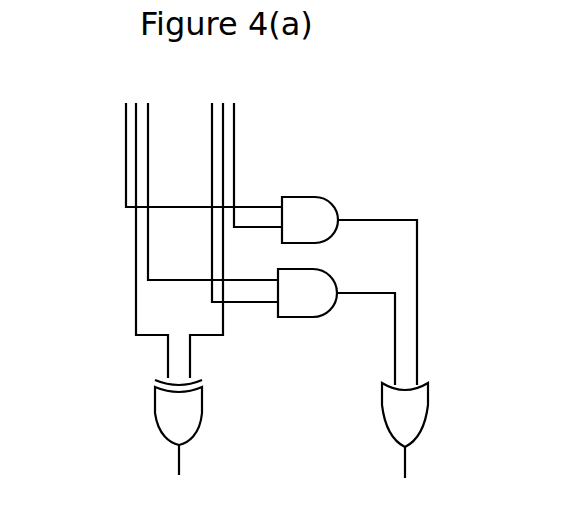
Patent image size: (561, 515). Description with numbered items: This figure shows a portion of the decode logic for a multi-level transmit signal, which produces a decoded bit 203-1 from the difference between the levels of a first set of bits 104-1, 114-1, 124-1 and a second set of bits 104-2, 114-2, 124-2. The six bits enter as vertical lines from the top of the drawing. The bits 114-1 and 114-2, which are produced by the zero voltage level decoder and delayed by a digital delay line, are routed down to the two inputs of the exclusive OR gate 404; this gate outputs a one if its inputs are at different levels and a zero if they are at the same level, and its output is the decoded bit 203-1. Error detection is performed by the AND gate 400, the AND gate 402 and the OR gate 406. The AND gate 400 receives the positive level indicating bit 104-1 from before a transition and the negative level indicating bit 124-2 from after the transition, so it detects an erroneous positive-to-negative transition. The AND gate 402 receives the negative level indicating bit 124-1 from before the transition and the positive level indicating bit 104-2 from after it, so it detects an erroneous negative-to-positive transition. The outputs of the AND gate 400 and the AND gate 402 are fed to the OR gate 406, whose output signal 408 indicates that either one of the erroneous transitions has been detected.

The positive level indicating bit 104-1 is at (126, 116).
The zero level bit 114-1 is at (136, 145).
The negative level indicating bit 124-1 is at (148, 180).
The positive level indicating bit 104-2 is at (234, 133).
The zero level bit 114-2 is at (223, 167).
The negative level indicating bit 124-2 is at (234, 197).
The AND gate 400 is at (335, 204).
The AND gate 402 is at (330, 278).
The exclusive OR (XOR) gate 404 is at (202, 398).
The OR gate 406 is at (428, 400).
The decoded bit 203-1 is at (179, 463).
The error signal 408 is at (405, 460).